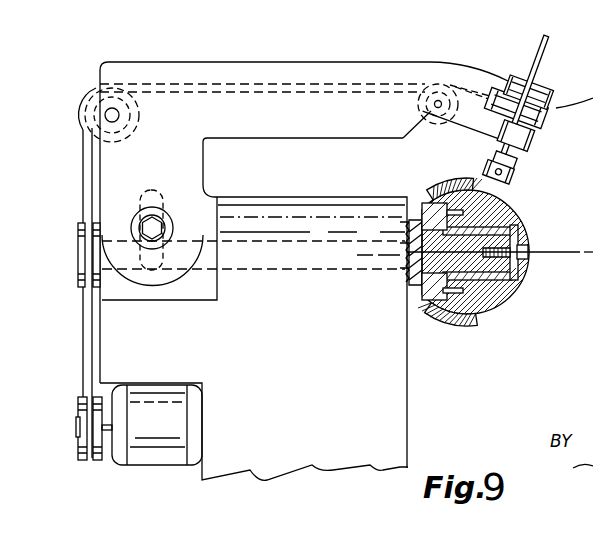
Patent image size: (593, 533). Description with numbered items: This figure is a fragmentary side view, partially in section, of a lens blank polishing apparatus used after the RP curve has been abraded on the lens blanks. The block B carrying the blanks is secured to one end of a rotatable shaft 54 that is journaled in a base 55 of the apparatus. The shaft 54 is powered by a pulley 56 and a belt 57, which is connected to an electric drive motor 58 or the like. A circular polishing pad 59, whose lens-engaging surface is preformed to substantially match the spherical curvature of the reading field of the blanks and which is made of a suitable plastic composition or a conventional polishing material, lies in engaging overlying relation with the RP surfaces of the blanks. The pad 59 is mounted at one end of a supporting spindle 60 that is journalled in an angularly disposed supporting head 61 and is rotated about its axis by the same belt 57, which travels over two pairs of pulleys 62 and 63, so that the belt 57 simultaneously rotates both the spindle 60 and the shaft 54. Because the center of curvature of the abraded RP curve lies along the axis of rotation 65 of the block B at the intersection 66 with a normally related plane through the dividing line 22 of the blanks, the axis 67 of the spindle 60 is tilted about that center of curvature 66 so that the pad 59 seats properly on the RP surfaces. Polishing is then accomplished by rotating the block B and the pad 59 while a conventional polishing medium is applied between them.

The dividing line 22 is at (474, 181).
The rotatable shaft 54 is at (363, 268).
The base 55 is at (395, 385).
The pulley 56 is at (77, 250).
The belt 57 is at (83, 338).
The electric drive motor 58 is at (143, 452).
The circular polishing pad 59 is at (512, 187).
The supporting spindle 60 is at (513, 153).
The supporting head 61 is at (535, 135).
The pulleys 62 is at (88, 100).
The pulleys 63 is at (418, 105).
The axis of rotation 65 is at (552, 257).
The center of curvature 66 is at (513, 297).
The axis of the spindle 67 is at (537, 67).
The block B is at (500, 210).